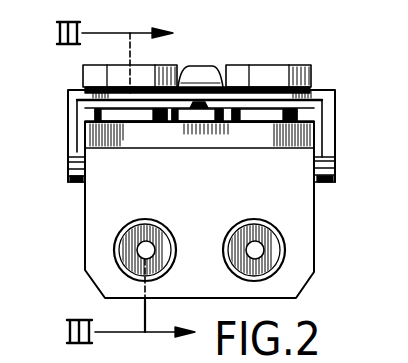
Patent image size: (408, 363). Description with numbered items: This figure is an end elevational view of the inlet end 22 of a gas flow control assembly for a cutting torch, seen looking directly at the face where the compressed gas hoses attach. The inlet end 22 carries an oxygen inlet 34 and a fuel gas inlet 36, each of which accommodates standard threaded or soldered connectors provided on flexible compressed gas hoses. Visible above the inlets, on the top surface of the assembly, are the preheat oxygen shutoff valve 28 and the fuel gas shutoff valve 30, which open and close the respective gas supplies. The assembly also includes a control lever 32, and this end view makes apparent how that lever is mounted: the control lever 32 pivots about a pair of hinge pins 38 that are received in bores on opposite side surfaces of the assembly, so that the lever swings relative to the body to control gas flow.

The inlet end 22 is at (216, 203).
The preheat oxygen shutoff valve 28 is at (310, 52).
The fuel gas shutoff valve 30 is at (83, 69).
The control lever 32 is at (335, 90).
The oxygen inlet 34 is at (272, 253).
The fuel gas inlet 36 is at (114, 250).
The hinge pins 38 is at (68, 167).